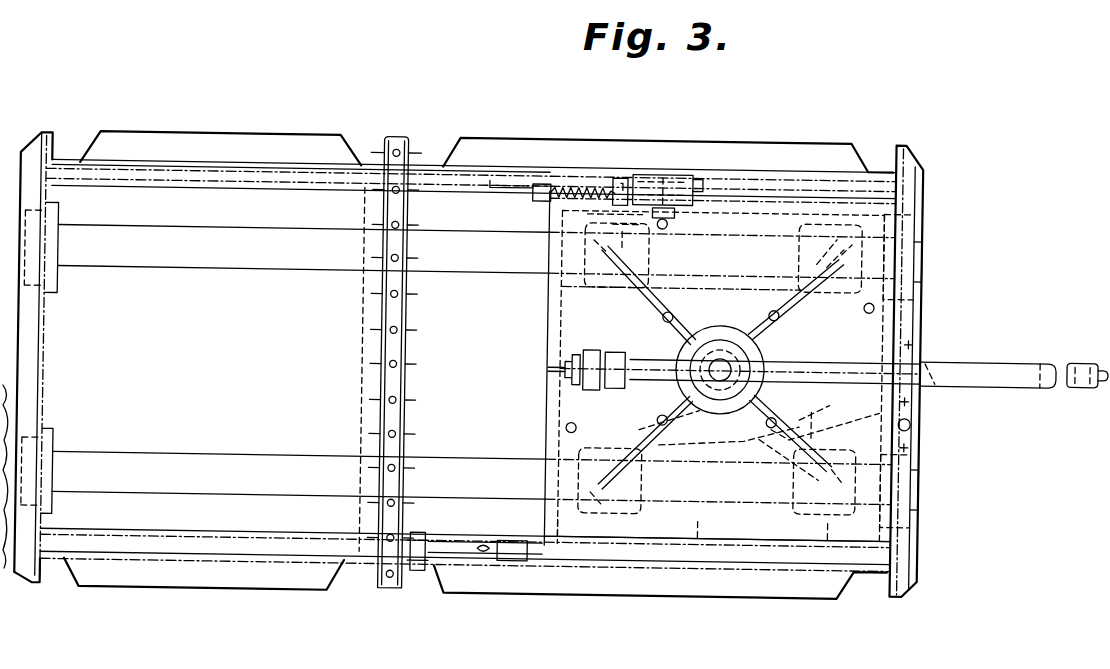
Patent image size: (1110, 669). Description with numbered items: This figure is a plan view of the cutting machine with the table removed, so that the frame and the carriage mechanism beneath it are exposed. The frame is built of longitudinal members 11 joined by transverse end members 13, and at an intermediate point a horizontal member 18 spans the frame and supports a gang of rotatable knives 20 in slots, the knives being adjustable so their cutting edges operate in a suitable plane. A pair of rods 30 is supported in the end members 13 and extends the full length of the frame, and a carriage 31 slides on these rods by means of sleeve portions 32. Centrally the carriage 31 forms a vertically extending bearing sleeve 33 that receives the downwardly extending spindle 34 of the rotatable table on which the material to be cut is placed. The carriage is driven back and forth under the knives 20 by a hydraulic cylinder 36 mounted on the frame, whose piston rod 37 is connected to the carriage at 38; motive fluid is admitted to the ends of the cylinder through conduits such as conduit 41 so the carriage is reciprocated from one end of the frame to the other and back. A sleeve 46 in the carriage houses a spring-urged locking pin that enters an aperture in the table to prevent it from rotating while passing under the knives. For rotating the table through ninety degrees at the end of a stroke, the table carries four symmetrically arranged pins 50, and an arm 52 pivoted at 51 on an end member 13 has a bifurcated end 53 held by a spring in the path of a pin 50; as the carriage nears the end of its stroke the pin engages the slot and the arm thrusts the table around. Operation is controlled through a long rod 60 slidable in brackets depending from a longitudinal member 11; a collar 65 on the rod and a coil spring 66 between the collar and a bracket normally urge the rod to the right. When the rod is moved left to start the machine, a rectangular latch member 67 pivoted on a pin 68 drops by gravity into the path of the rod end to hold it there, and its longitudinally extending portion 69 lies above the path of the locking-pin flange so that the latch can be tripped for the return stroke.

The longitudinal member 11 is at (117, 183).
The transverse member 13 is at (898, 541).
The horizontal member 18 is at (390, 449).
The rotatable knife 20 is at (403, 331).
The rod 30 is at (242, 262).
The carriage 31 is at (560, 344).
The sleeve portion 32 is at (808, 232).
The bearing sleeve 33 is at (730, 338).
The spindle 34 is at (738, 359).
The hydraulic cylinder 36 is at (942, 368).
The piston rod 37 is at (620, 353).
The connection 38 is at (572, 370).
The conduit 41 is at (1104, 380).
The sleeve 46 is at (664, 227).
The pin 50 is at (780, 313).
The pivot 51 is at (912, 418).
The arm 52 is at (760, 438).
The bifurcated end 53 is at (664, 410).
The rod 60 is at (508, 191).
The collar 65 is at (617, 181).
The coil spring 66 is at (572, 185).
The latch member 67 is at (692, 164).
The pin 68 is at (670, 164).
The longitudinally extending portion 69 is at (675, 209).